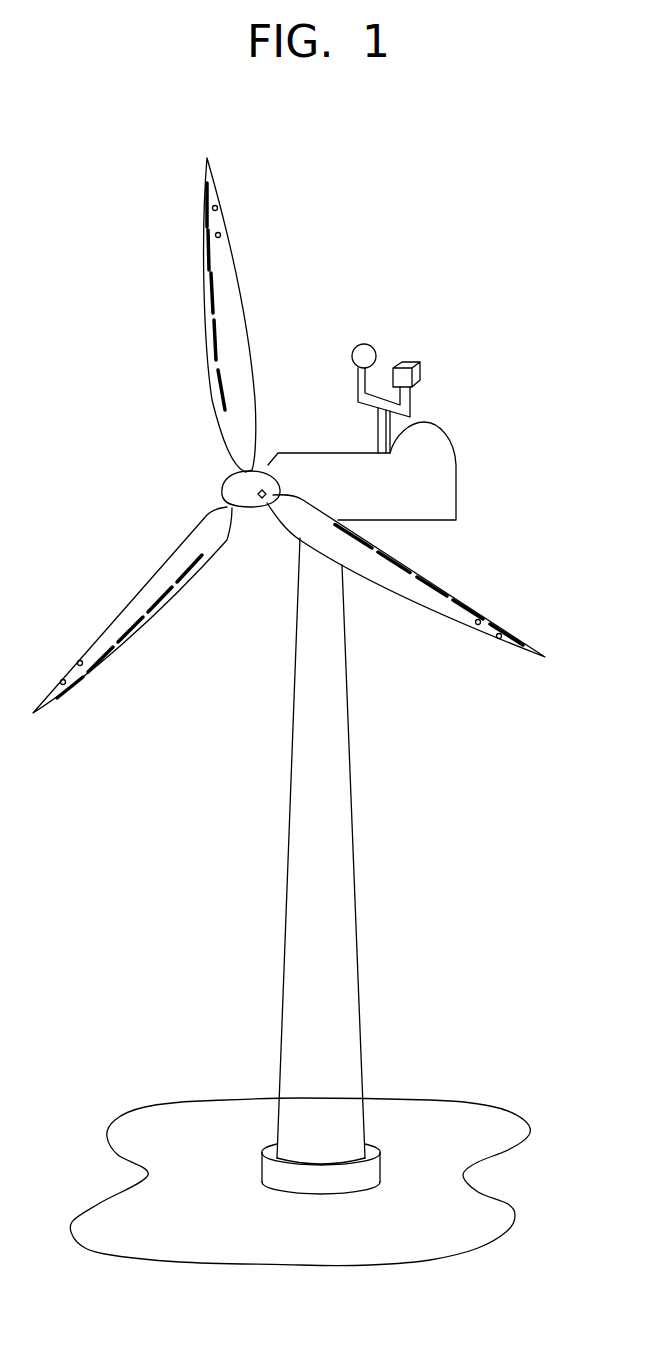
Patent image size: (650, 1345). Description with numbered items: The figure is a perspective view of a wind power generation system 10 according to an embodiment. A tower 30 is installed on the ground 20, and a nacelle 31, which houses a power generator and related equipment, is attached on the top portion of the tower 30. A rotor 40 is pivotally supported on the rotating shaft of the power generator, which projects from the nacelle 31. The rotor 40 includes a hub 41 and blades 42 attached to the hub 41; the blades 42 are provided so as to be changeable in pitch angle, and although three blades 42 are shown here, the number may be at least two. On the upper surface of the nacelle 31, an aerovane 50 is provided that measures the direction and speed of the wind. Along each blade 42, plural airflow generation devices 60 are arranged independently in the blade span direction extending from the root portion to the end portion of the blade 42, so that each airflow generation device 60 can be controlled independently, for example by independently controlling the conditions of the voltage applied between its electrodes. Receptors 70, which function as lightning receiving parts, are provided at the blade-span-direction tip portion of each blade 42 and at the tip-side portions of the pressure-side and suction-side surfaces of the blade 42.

The wind power generation system 10 is at (543, 172).
The ground 20 is at (430, 1112).
The tower 30 is at (335, 857).
The nacelle 31 is at (435, 495).
The rotor 40 is at (268, 292).
The hub 41 is at (263, 498).
The blade 42 is at (223, 220).
The aerovane 50 is at (373, 396).
The airflow generation device 60 is at (213, 342).
The receptor 70 is at (476, 627).